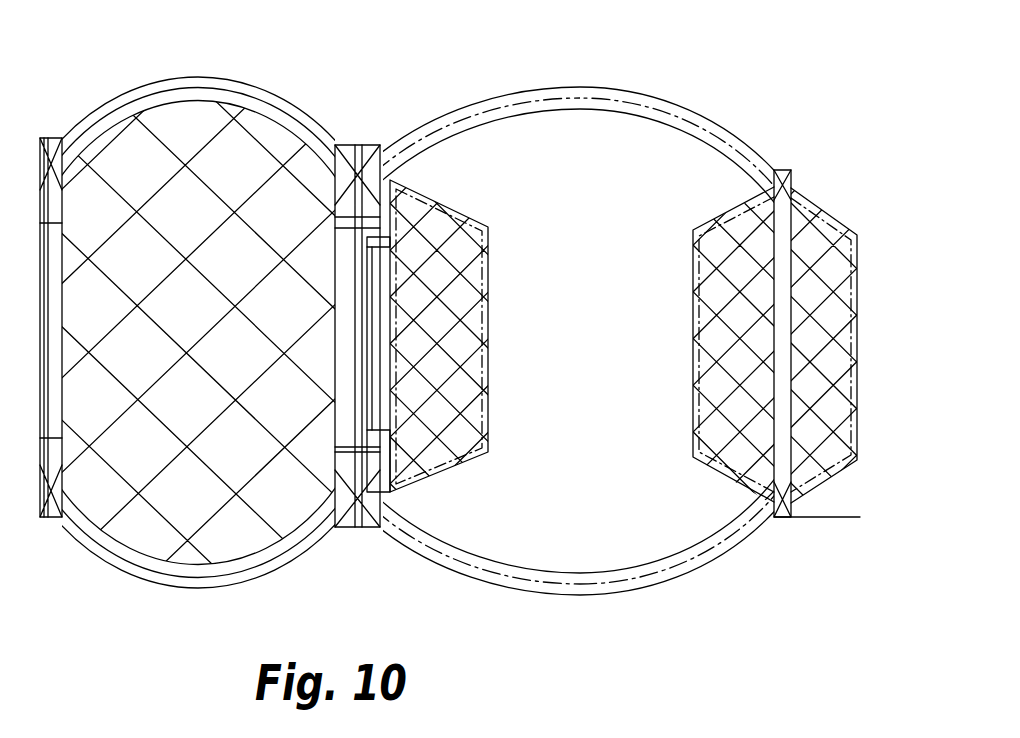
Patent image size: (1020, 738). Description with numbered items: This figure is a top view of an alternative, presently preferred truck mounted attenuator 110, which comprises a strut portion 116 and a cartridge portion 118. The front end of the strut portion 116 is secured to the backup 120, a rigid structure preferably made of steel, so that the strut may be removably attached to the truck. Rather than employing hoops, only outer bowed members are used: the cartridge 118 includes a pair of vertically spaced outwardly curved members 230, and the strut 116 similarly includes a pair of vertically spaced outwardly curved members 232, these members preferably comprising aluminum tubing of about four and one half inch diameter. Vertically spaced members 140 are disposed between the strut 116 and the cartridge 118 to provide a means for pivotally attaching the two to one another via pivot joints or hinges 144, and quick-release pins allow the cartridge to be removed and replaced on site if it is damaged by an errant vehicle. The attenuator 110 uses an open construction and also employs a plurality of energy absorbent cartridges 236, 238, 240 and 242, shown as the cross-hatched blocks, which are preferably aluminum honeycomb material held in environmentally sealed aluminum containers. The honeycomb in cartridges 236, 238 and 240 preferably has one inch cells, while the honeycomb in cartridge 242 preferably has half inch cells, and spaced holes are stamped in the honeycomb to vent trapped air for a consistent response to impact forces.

The truck mounted attenuator 110 is at (580, 331).
The strut portion 116 is at (162, 590).
The cartridge portion 118 is at (684, 568).
The backup 120 is at (40, 187).
The vertically spaced members 140 is at (394, 216).
The pivot joints 144 is at (379, 178).
The outwardly curved members 230 is at (633, 122).
The outwardly curved members 232 is at (283, 119).
The energy absorbent cartridge 236 is at (240, 457).
The energy absorbent cartridge 238 is at (462, 348).
The energy absorbent cartridge 240 is at (736, 313).
The energy absorbent cartridge 242 is at (843, 230).